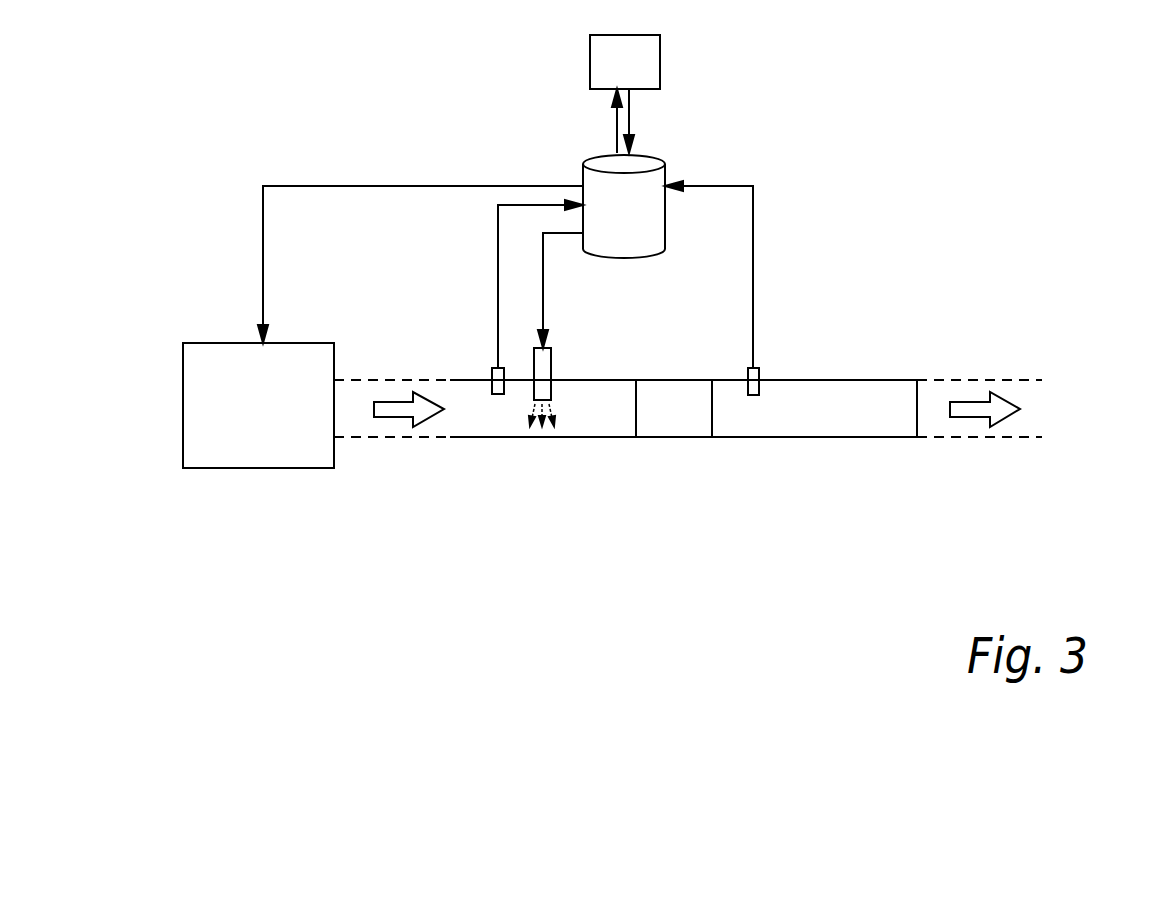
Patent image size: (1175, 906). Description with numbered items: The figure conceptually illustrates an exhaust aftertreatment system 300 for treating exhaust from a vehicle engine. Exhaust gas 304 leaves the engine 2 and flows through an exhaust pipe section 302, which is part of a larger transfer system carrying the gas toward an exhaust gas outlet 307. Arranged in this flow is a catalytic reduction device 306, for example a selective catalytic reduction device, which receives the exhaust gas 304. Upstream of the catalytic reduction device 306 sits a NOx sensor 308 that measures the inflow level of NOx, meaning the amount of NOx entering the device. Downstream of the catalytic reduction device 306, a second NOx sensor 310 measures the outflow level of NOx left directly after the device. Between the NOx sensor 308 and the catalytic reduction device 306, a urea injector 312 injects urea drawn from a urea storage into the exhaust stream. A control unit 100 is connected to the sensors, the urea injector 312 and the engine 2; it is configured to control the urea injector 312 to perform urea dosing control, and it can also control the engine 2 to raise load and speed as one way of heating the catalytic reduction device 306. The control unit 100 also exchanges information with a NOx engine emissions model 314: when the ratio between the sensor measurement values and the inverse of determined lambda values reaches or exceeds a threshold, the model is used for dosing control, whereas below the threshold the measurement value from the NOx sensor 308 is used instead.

The exhaust aftertreatment system 300 is at (450, 280).
The engine 2 is at (264, 417).
The control unit 100 is at (648, 218).
The NOx engine emissions model 314 is at (661, 65).
The NOx sensor 308 is at (493, 367).
The urea injector 312 is at (552, 362).
The second NOx sensor 310 is at (760, 370).
The exhaust pipe section 302 is at (520, 440).
The catalytic reduction device 306 is at (696, 422).
The exhaust gas 304 is at (388, 418).
The exhaust gas outlet 307 is at (1052, 391).